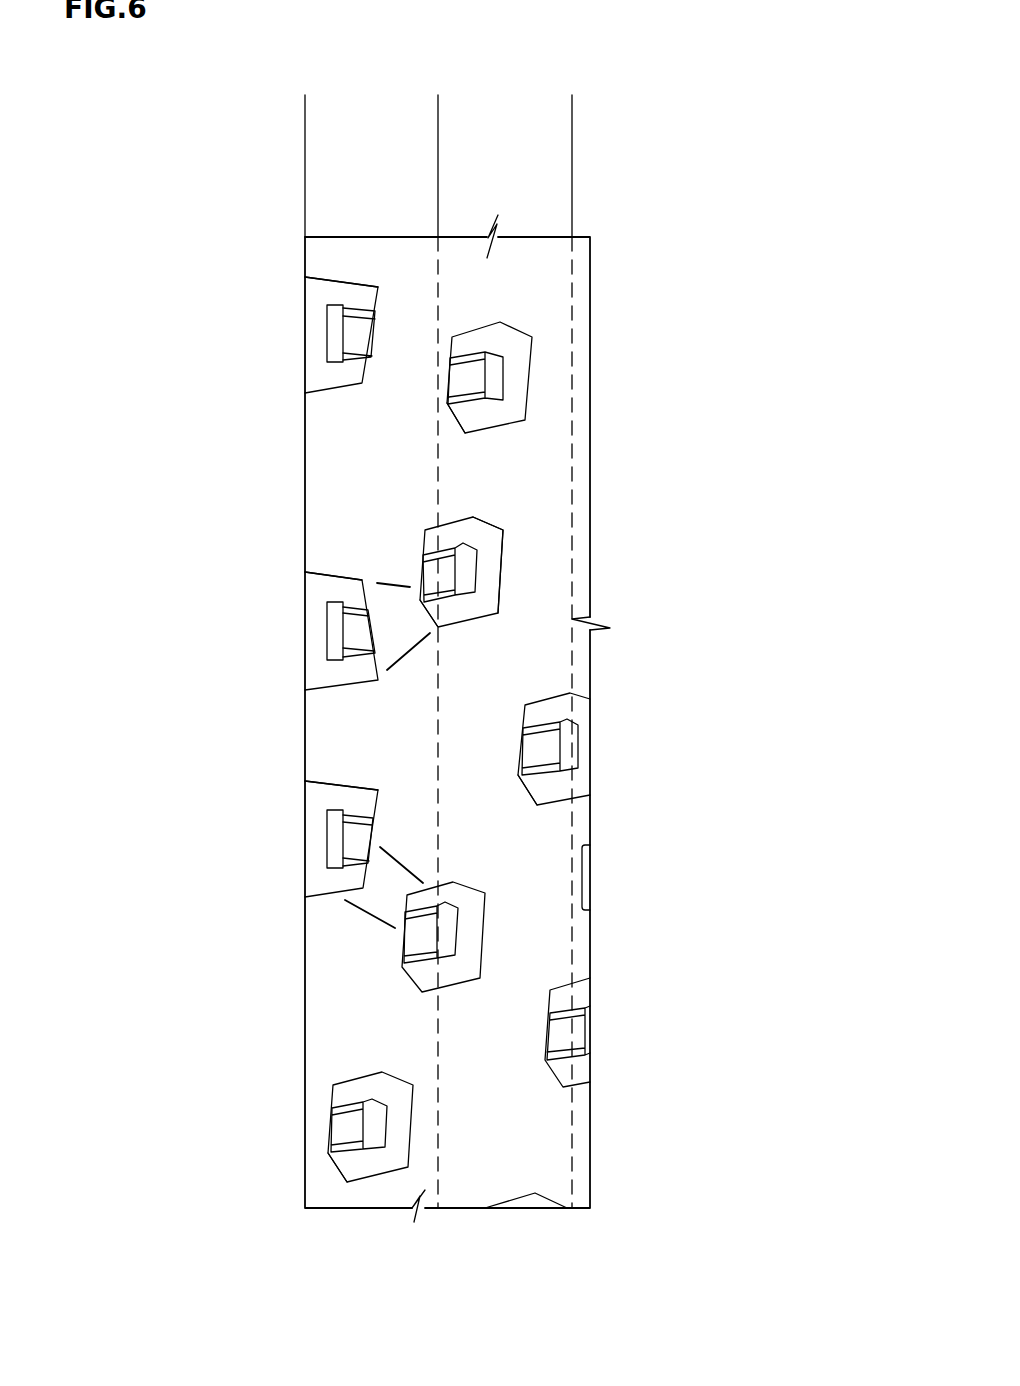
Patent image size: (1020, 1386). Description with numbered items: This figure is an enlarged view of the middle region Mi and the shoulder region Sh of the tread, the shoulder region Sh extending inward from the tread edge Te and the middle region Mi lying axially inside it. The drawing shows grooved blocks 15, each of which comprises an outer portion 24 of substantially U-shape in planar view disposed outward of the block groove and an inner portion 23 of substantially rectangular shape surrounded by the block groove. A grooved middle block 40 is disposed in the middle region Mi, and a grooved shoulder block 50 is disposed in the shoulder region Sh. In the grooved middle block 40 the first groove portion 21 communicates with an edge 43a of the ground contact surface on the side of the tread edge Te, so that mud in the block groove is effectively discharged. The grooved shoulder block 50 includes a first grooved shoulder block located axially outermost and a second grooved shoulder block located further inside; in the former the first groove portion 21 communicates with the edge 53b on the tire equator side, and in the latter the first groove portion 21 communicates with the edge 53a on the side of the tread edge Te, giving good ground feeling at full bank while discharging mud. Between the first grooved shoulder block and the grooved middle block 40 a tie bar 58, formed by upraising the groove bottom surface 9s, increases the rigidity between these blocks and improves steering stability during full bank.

The grooved block 15 is at (755, 242).
The first groove portion 21 is at (355, 358).
The inner portion 23 is at (445, 570).
The outer portion 24 is at (490, 572).
The grooved middle block 40 is at (524, 355).
The edge of the ground contact surface 43a is at (444, 398).
The grooved shoulder block 50 is at (370, 343).
The edge of the ground contact surface 53a is at (327, 1138).
The edge of the ground contact surface 53b is at (378, 326).
The tie bar 58 is at (400, 607).
The tread edge Te is at (305, 237).
The groove bottom surface 9s is at (423, 250).
The shoulder region Sh is at (438, 95).
The middle region Mi is at (572, 95).